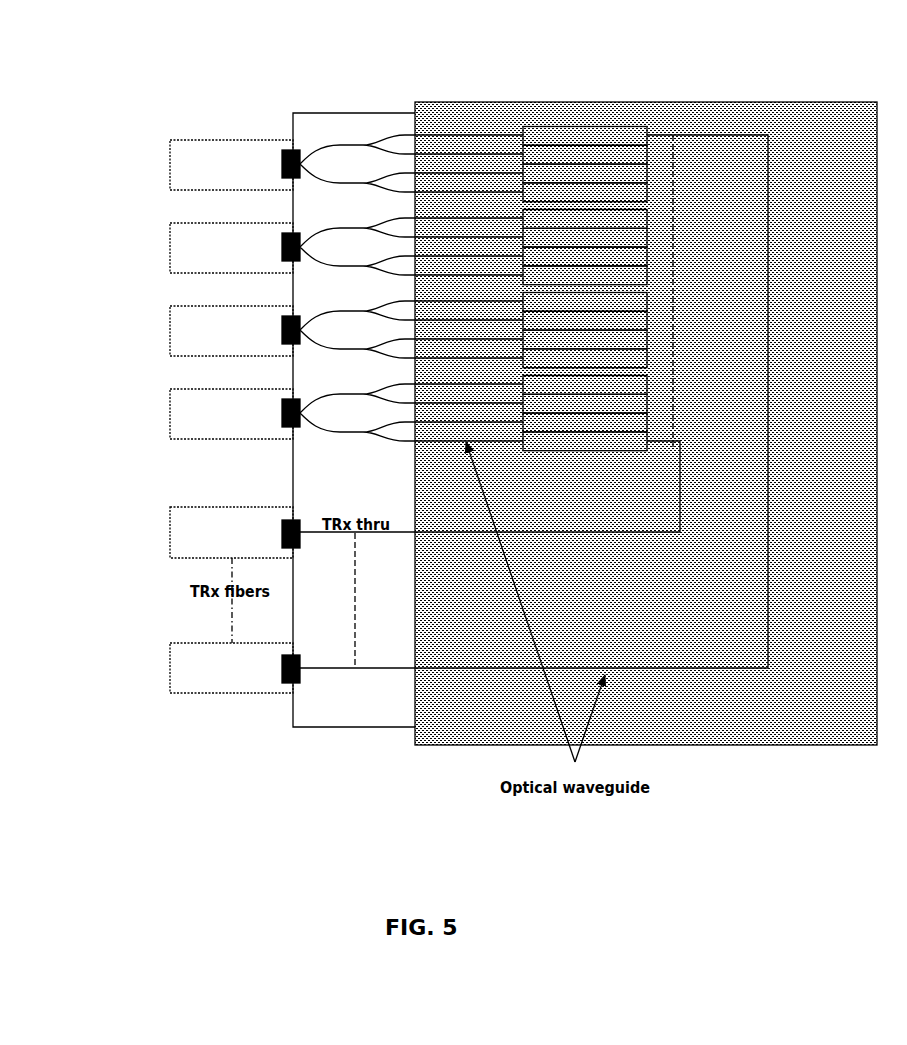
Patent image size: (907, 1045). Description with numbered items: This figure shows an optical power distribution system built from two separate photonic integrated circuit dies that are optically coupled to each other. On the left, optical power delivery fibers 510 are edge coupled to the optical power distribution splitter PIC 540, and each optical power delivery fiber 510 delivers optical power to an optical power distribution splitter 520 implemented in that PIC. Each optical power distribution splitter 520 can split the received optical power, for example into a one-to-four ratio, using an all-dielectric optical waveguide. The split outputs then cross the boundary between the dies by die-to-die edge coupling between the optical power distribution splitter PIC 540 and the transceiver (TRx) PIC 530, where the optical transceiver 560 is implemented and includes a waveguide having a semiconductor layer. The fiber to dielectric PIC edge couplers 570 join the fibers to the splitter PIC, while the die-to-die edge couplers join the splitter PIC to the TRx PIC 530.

The optical power delivery fibers 510 is at (170, 410).
The optical power distribution splitter 520 is at (463, 60).
The transceiver (TRx) PIC 530 is at (646, 423).
The optical power distribution splitter PIC 540 is at (350, 113).
The optical transceiver 560 is at (642, 97).
The fiber to dielectric PIC edge couplers 570 is at (293, 747).